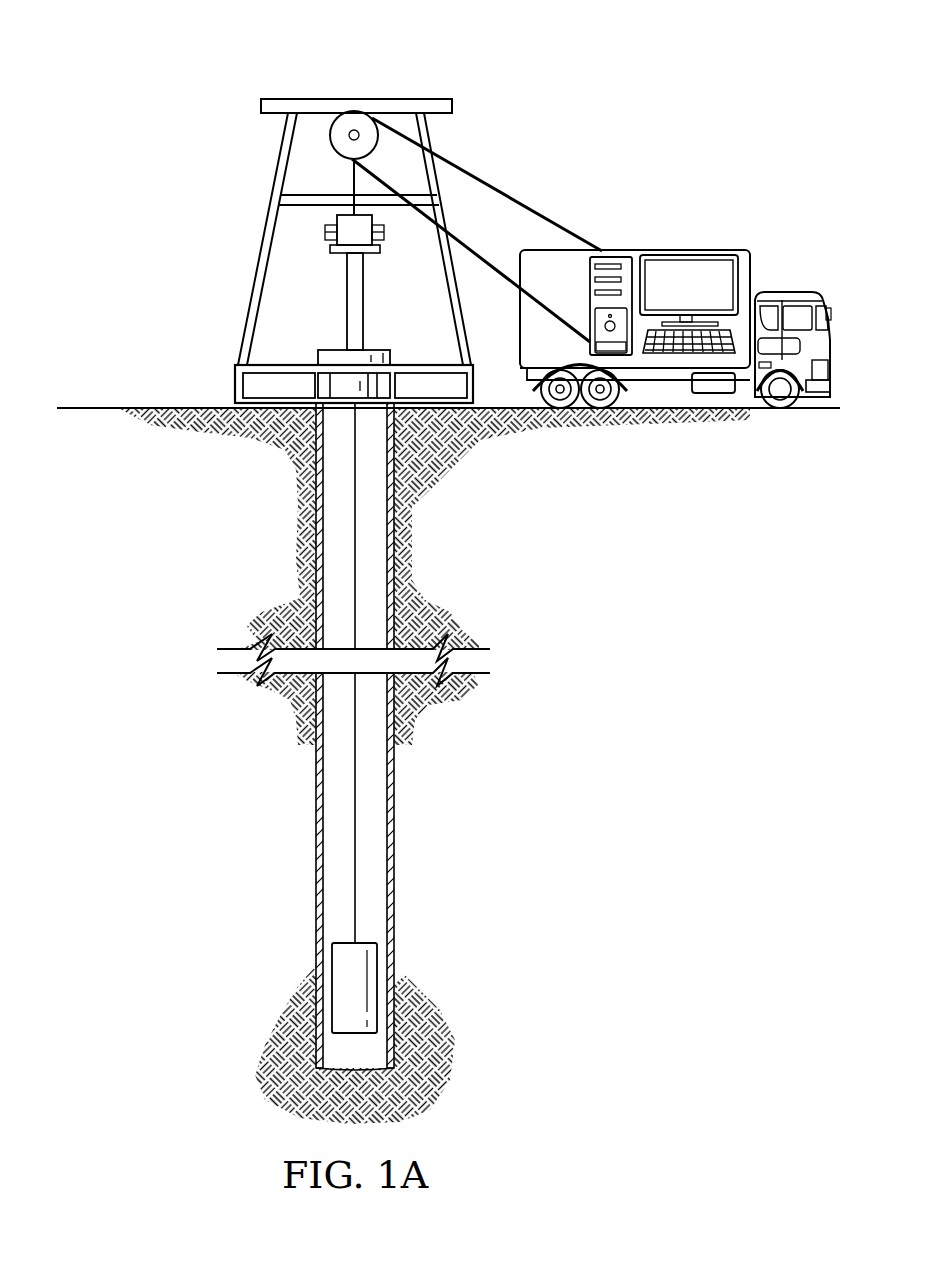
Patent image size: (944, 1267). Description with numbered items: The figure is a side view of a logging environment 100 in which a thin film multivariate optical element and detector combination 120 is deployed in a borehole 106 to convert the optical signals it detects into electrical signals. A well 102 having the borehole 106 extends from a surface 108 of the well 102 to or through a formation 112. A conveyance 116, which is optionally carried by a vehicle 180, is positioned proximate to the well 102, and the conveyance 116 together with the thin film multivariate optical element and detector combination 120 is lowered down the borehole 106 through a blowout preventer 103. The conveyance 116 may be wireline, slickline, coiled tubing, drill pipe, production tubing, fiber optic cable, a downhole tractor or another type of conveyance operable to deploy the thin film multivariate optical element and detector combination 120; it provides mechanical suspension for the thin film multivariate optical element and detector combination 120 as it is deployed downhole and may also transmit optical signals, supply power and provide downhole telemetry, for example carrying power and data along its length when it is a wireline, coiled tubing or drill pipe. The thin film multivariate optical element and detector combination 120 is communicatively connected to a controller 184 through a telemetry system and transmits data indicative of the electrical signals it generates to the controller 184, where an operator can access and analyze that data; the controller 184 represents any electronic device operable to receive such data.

The logging environment 100 is at (172, 62).
The well 102 is at (390, 342).
The blowout preventer 103 is at (345, 310).
The borehole 106 is at (394, 557).
The surface 108 is at (175, 405).
The formation 112 is at (540, 885).
The conveyance 116 is at (355, 897).
The thin film multivariate optical element and detector combination 120 is at (377, 983).
The vehicle 180 is at (668, 250).
The controller 184 is at (612, 256).